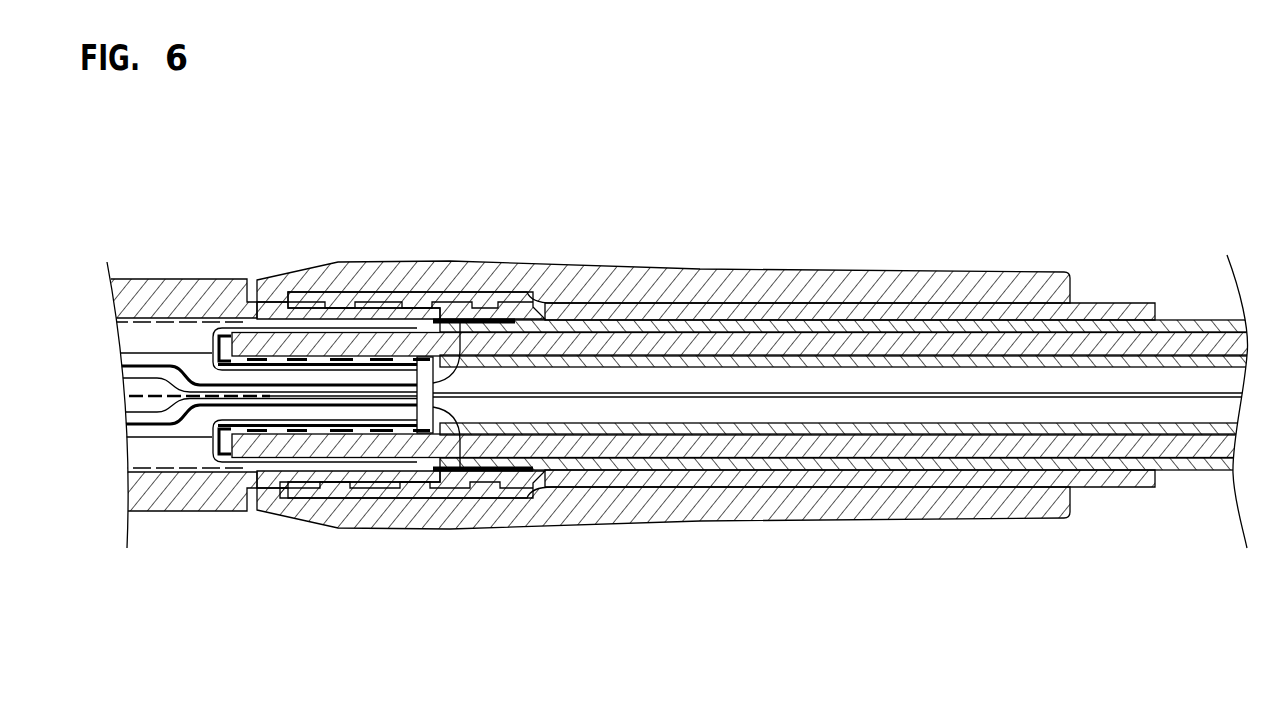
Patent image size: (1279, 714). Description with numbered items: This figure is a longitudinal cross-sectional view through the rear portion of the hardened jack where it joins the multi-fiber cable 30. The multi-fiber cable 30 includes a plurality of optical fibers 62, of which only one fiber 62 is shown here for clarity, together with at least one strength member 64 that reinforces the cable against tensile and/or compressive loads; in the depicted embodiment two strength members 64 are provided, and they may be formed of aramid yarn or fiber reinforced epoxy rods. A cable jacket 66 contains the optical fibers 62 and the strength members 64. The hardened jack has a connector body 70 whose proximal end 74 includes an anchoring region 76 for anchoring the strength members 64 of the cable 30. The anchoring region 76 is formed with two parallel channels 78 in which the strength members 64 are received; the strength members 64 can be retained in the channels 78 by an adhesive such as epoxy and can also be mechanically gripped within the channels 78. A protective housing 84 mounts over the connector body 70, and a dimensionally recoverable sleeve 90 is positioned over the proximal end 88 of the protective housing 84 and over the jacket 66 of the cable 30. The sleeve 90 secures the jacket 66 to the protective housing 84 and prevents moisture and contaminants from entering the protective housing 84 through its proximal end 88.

The multi-fiber cable 30 is at (1190, 472).
The optical fibers 62 is at (603, 393).
The strength member 64 is at (958, 335).
The cable jacket 66 is at (1172, 320).
The connector body 70 is at (173, 335).
The proximal end 74 is at (460, 337).
The anchoring region 76 is at (252, 312).
The channels 78 is at (287, 335).
The protective housing 84 is at (155, 287).
The proximal end 88 is at (507, 312).
The dimensionally recoverable sleeve 90 is at (542, 492).